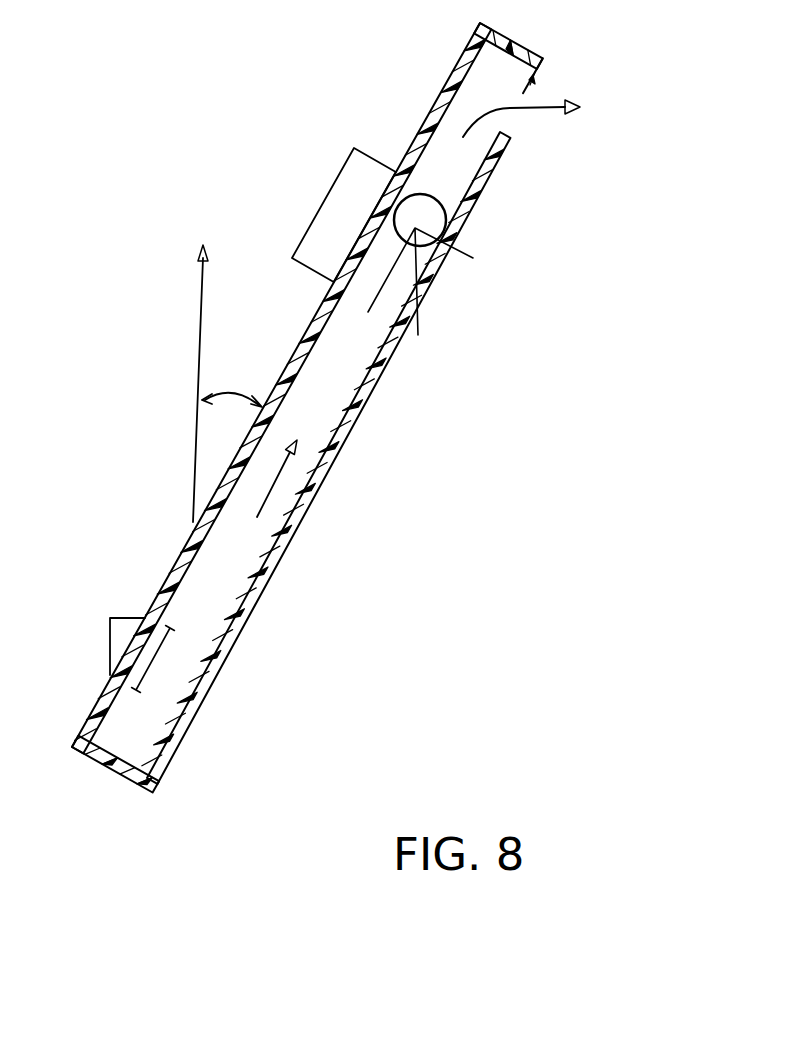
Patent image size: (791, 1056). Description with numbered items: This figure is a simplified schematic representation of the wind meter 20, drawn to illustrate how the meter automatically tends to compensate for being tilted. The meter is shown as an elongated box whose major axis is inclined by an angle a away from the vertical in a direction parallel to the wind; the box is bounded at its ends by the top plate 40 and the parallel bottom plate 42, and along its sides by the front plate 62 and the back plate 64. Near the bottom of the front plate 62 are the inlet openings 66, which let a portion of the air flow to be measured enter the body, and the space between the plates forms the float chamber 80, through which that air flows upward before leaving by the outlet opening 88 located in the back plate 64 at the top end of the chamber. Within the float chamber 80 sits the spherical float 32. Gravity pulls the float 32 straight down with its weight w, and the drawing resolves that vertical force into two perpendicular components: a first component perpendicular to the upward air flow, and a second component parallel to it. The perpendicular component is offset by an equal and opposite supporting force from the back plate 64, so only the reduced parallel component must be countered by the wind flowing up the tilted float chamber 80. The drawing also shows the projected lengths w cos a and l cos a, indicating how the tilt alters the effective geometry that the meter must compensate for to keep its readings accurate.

The wind meter 20 is at (236, 174).
The spherical float 32 is at (433, 196).
The top plate 40 is at (513, 42).
The bottom plate 42 is at (110, 778).
The front plate 62 is at (303, 333).
The back plate 64 is at (372, 388).
The inlet openings 66 is at (80, 638).
The float chamber 80 is at (323, 398).
The outlet opening 88 is at (549, 110).